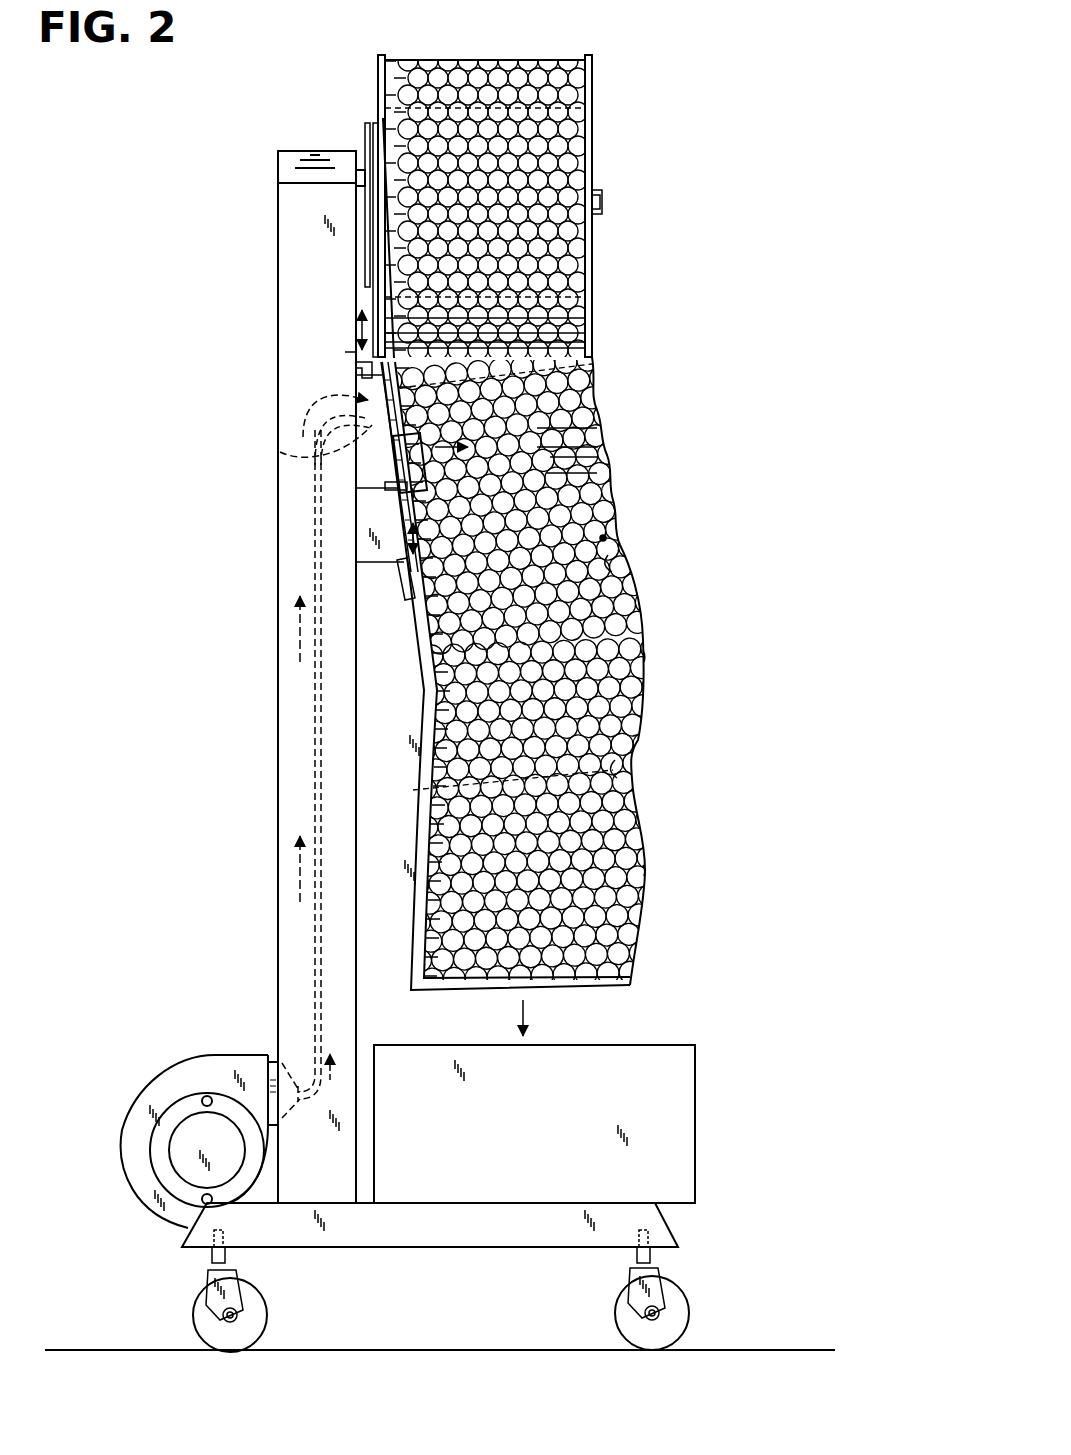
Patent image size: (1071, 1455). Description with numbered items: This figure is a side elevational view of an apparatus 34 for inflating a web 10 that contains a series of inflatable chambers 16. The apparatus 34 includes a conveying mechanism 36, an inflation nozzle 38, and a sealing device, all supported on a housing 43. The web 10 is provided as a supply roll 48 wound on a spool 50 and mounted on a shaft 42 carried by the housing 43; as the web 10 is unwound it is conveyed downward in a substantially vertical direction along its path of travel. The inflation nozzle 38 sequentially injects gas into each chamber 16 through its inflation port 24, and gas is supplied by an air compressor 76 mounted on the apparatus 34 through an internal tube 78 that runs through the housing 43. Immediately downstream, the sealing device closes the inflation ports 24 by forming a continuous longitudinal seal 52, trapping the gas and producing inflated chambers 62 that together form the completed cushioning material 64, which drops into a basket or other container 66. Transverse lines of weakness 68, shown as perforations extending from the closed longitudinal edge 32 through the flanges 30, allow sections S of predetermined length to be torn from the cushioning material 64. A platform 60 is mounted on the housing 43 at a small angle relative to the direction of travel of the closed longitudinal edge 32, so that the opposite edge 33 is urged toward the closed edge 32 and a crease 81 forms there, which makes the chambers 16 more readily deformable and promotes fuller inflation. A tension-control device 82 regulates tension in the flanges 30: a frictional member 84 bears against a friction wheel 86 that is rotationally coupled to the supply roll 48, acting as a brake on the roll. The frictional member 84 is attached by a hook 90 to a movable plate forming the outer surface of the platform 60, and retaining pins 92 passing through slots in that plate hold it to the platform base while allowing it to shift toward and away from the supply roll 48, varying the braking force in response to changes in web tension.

The web 10 is at (604, 382).
The inflatable chambers 16 is at (578, 386).
The inflation ports 24 is at (432, 646).
The flanges 30 is at (430, 718).
The closed longitudinal edge 32 is at (612, 513).
The edge 33 is at (412, 870).
The apparatus 34 is at (643, 66).
The conveying mechanism 36 is at (622, 324).
The inflation nozzle 38 is at (316, 432).
The shaft 42 is at (602, 205).
The housing 43 is at (276, 225).
The supply roll 48 is at (527, 56).
The spool 50 is at (600, 197).
The longitudinal seal 52 is at (410, 580).
The platform 60 is at (378, 541).
The inflated chambers 62 is at (606, 538).
The cushioning material 64 is at (650, 612).
The container 66 is at (682, 1086).
The lines of weakness 68 is at (612, 560).
The air compressor 76 is at (179, 1060).
The internal tube 78 is at (318, 716).
The crease 81 is at (612, 494).
The tension-control device 82 is at (343, 352).
The frictional member 84 is at (366, 295).
The friction wheel 86 is at (368, 128).
The hook 90 is at (362, 373).
The retaining pins 92 is at (392, 484).
The sections S is at (645, 657).